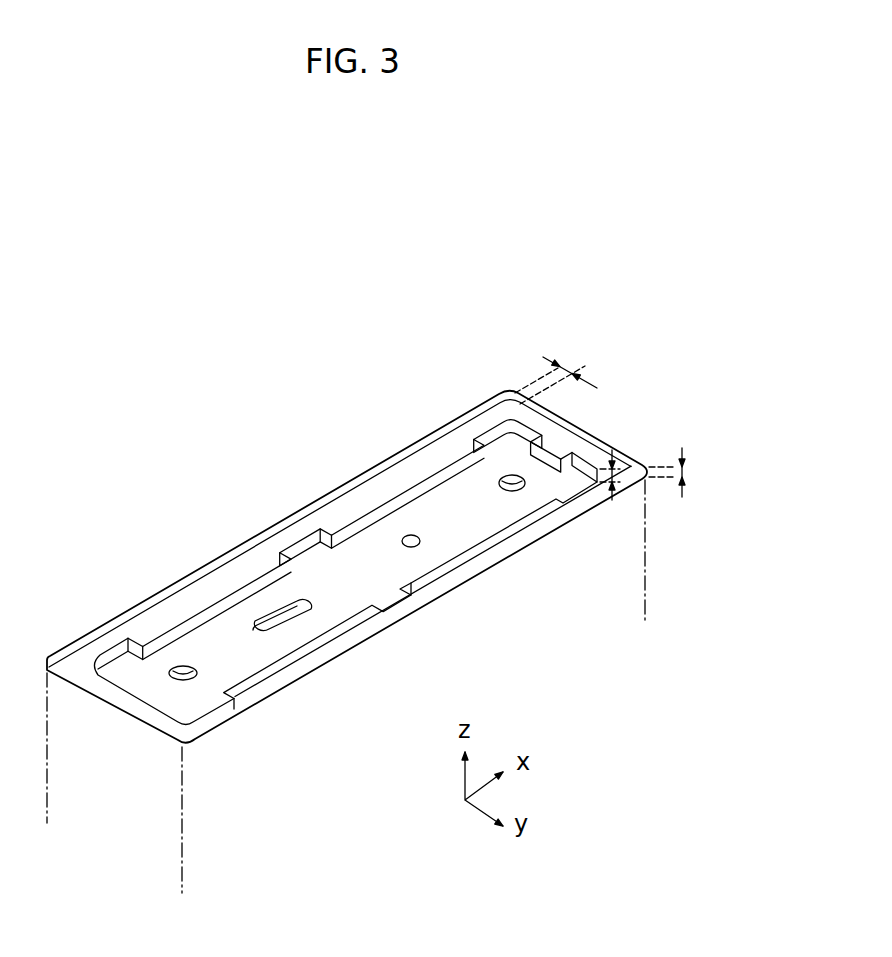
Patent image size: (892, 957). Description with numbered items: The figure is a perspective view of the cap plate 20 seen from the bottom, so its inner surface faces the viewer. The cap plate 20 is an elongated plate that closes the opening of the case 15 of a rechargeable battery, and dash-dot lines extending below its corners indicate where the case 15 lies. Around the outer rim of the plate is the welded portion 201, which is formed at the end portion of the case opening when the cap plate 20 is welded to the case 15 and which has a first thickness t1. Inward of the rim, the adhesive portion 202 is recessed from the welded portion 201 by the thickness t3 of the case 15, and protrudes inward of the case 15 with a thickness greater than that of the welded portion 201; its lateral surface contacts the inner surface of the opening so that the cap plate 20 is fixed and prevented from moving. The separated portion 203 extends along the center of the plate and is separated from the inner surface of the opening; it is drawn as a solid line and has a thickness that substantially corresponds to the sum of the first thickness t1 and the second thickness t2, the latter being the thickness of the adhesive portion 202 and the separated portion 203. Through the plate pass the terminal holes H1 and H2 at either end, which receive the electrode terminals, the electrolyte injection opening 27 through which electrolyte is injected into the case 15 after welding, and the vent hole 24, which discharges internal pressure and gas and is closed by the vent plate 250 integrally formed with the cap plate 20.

The cap plate 20 is at (377, 203).
The welded portion 201 is at (340, 505).
The adhesive portion 202 is at (483, 440).
The separated portion 203 is at (397, 503).
The vent hole 24 is at (283, 623).
The vent plate 250 is at (294, 607).
The electrolyte injection opening 27 is at (413, 545).
The terminal hole H1 is at (186, 676).
The terminal hole H2 is at (517, 485).
The case 15 is at (182, 867).
The first thickness t1 is at (679, 472).
The second thickness t2 is at (613, 494).
The thickness of the case t3 is at (557, 374).